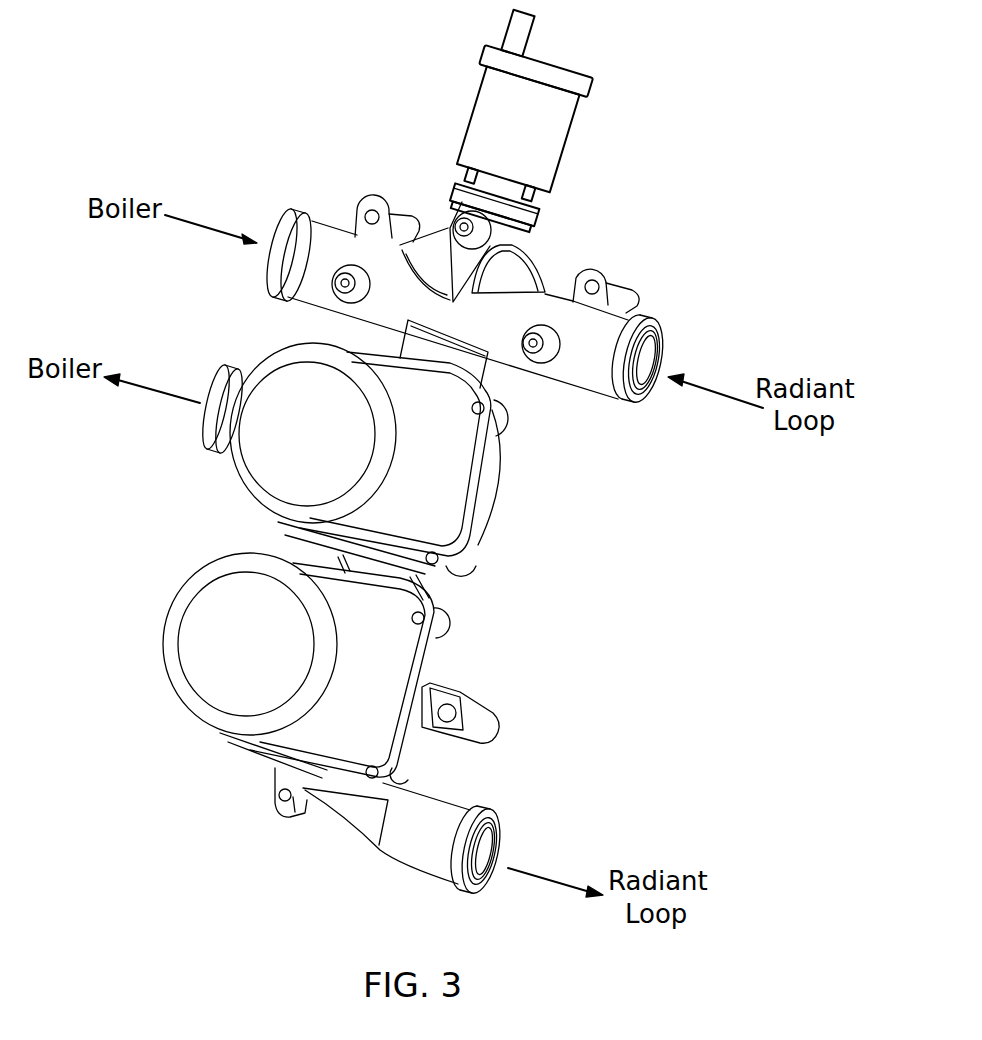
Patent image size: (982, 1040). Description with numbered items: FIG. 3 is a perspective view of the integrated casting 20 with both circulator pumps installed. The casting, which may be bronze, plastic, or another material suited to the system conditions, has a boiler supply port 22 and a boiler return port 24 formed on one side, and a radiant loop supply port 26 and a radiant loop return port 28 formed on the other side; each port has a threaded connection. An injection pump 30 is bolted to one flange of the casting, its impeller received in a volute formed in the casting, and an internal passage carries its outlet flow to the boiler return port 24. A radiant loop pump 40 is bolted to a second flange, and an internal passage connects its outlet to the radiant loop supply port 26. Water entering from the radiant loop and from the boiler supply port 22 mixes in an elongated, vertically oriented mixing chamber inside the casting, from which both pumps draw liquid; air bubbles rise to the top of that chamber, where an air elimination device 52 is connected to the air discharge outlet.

The integrated casting 20 is at (455, 217).
The boiler supply port 22 is at (282, 220).
The boiler return port 24 is at (228, 370).
The radiant loop supply port 26 is at (496, 808).
The radiant loop return port 28 is at (664, 350).
The injection pump 30 is at (250, 497).
The radiant loop pump 40 is at (193, 712).
The air elimination device 52 is at (487, 97).